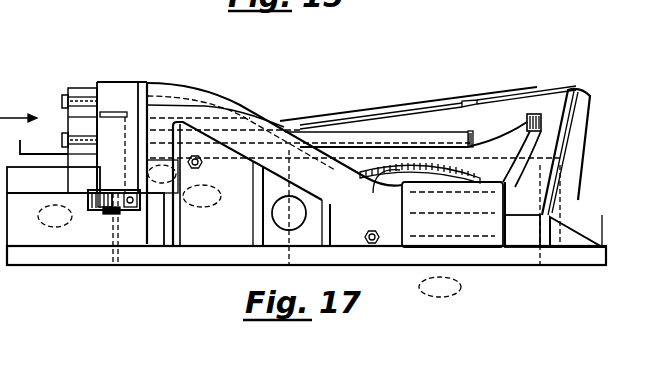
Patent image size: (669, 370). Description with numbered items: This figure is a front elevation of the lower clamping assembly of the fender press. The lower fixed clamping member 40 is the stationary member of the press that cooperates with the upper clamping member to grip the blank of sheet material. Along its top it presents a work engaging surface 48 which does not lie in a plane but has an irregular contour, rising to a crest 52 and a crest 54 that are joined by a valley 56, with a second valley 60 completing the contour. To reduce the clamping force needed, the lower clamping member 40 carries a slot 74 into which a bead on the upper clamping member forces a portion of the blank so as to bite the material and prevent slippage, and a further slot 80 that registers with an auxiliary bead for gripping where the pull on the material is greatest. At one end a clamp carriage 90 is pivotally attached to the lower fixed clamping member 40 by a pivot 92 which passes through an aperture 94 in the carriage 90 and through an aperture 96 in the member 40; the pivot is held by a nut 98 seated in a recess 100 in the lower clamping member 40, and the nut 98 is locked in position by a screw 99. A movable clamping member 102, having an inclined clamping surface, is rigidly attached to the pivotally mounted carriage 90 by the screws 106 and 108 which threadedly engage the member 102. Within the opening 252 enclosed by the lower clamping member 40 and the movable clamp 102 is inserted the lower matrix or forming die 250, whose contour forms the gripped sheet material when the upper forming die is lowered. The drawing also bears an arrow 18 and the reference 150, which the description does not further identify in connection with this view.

The direction arrow 18 is at (18, 119).
The lower fixed clamping member 40 is at (113, 225).
The work engaging surface 48 is at (555, 108).
The crest 52 is at (167, 80).
The crest 54 is at (580, 113).
The valley 56 is at (463, 210).
The second valley 60 is at (192, 165).
The slot 74 is at (390, 122).
The slot 80 is at (422, 112).
The clamp carriage 90 is at (50, 116).
The pivot 92 is at (125, 112).
The aperture 94 is at (100, 155).
The aperture 96 is at (162, 176).
The nut 98 is at (107, 208).
The screw 99 is at (131, 208).
The recess 100 is at (123, 214).
The movable clamping member 102 is at (130, 87).
The screw 106 is at (63, 93).
The screw 108 is at (62, 138).
The support block 150 is at (49, 175).
The lower matrix or forming die 250 is at (427, 180).
The opening 252 is at (468, 152).